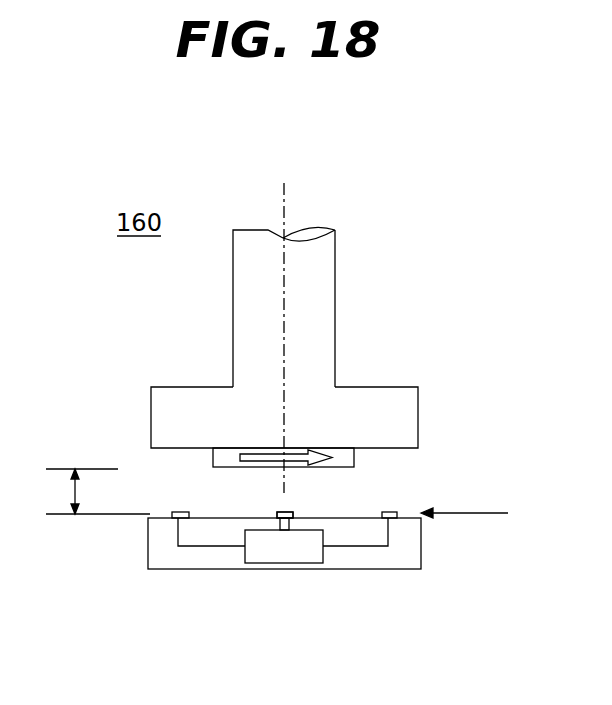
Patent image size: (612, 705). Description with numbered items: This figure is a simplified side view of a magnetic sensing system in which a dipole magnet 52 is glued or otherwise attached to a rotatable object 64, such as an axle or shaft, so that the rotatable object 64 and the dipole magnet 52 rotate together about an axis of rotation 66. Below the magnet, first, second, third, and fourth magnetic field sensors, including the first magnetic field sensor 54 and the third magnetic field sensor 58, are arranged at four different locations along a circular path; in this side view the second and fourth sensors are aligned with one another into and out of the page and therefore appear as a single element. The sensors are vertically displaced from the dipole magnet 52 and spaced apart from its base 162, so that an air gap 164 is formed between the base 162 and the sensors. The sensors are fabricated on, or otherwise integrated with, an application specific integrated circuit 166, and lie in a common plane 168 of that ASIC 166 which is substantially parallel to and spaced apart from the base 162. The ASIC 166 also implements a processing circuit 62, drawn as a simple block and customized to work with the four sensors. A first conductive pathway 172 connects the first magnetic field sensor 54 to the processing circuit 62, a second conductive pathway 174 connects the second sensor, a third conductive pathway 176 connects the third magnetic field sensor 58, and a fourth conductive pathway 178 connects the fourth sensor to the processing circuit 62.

The rotatable object 64 is at (322, 268).
The axis of rotation 66 is at (285, 211).
The base 162 is at (341, 466).
The dipole magnet 52 is at (212, 465).
The air gap 164 is at (75, 490).
The application specific integrated circuit (ASIC) 166 is at (390, 562).
The third conductive pathway 176 is at (203, 547).
The first conductive pathway 172 is at (367, 547).
The processing circuit 62 is at (252, 558).
The fourth conductive pathway 178 is at (290, 525).
The third magnetic field sensor 58 is at (168, 515).
The second conductive pathway 174 is at (280, 527).
The first magnetic field sensor 54 is at (397, 515).
The common plane 168 is at (488, 514).